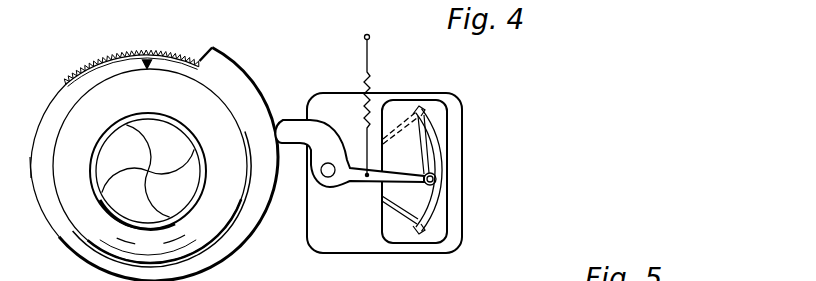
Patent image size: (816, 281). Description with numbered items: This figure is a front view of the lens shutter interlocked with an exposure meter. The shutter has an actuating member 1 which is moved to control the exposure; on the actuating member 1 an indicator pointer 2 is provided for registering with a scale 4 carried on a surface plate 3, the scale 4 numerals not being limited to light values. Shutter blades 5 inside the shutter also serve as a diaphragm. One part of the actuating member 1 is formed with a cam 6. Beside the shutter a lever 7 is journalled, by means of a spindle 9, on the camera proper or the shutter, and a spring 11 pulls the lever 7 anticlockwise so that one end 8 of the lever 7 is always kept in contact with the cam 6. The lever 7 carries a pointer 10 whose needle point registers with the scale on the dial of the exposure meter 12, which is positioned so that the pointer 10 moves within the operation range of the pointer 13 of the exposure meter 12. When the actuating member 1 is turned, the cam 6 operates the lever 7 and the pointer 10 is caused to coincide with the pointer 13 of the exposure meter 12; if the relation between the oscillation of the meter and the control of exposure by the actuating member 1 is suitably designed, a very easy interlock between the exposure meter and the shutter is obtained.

The actuating member 1 is at (177, 58).
The indicator pointer 2 is at (146, 60).
The surface plate 3 is at (222, 200).
The scale 4 is at (97, 85).
The shutter blades 5 is at (177, 200).
The cam 6 is at (238, 74).
The lever 7 is at (321, 135).
The end of lever 8 is at (282, 128).
The spindle 9 is at (321, 181).
The pointer 10 is at (437, 179).
The spring 11 is at (370, 80).
The exposure meter 12 is at (459, 112).
The pointer of exposure meter 13 is at (432, 198).